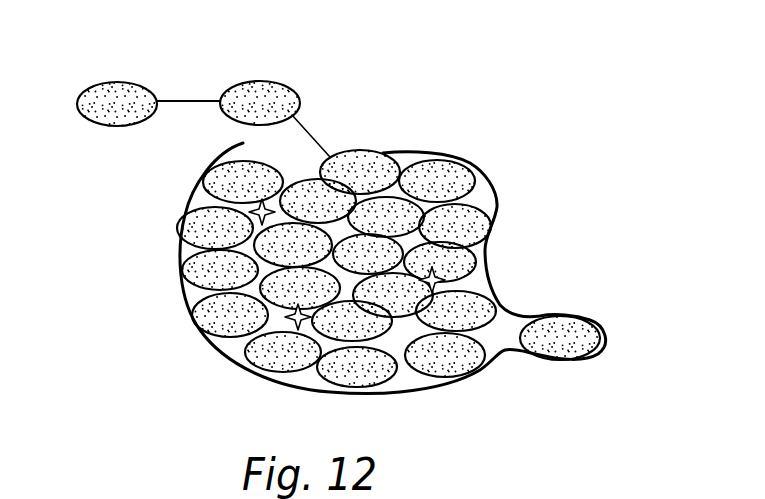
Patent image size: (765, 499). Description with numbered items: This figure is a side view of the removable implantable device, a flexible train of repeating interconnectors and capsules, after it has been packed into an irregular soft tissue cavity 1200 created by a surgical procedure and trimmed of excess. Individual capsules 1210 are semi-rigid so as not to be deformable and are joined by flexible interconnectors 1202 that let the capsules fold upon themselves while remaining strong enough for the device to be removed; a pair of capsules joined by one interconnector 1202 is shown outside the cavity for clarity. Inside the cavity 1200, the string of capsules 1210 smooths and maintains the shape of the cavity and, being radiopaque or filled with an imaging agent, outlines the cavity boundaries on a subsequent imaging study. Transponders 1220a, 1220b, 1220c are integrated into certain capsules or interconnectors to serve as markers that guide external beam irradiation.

The nanoparticle cluster 1200 is at (378, 108).
The nanoparticle 1202 is at (185, 99).
The nanoparticle 1210 is at (274, 82).
The binding site 1220a is at (252, 214).
The binding site 1220b is at (296, 320).
The binding site 1220c is at (440, 284).